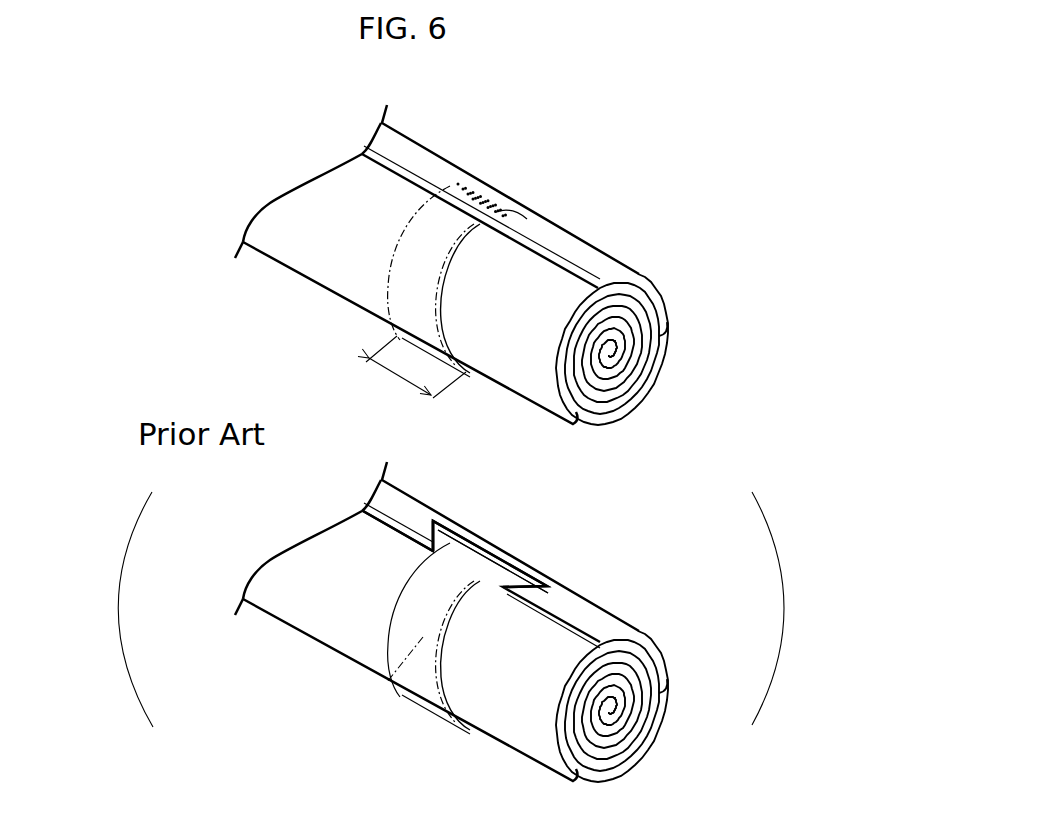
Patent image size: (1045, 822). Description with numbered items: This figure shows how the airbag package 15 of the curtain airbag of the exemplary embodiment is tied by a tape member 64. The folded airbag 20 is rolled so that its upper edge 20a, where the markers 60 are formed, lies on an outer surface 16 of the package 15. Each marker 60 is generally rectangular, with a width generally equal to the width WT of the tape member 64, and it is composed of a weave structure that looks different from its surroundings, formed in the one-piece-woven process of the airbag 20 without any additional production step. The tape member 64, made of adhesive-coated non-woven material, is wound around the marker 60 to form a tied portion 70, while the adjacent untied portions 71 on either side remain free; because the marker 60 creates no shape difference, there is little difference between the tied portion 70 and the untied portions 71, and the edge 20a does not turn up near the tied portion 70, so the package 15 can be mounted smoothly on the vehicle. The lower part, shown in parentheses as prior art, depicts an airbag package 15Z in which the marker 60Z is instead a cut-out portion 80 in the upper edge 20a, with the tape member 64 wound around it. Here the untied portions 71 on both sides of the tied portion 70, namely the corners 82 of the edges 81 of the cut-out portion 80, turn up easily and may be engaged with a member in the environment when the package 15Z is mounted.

The airbag package 15 is at (360, 264).
The outer surface 16 is at (342, 197).
The airbag 20 is at (303, 240).
The upper edge 20a is at (598, 272).
The marker 60 is at (455, 182).
The tape member 64 is at (407, 278).
The tied portion 70 is at (507, 193).
The untied portion 71 is at (430, 172).
The width of the tape member WT is at (409, 371).
The airbag package 15Z is at (287, 537).
The marker 60Z is at (586, 557).
The cut-out portion 80 is at (505, 582).
The edge 81 is at (436, 551).
The corner 82 is at (420, 532).